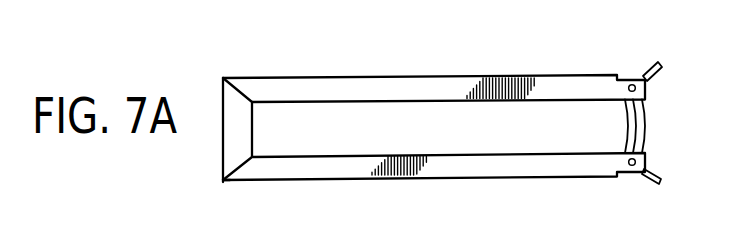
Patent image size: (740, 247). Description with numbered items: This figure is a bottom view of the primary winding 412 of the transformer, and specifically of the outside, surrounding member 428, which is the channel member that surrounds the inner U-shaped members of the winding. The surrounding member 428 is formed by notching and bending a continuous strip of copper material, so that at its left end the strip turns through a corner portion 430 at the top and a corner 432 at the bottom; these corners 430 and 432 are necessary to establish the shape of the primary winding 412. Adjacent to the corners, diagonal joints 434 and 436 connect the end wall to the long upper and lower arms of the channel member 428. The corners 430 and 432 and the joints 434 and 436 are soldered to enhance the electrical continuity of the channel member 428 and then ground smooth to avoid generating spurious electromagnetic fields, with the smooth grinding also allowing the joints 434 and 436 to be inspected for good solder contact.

The primary winding 412 is at (493, 180).
The surrounding member 428 is at (557, 82).
The corner portion 430 is at (224, 78).
The corner 432 is at (223, 180).
The joint 434 is at (252, 102).
The joint 436 is at (241, 165).